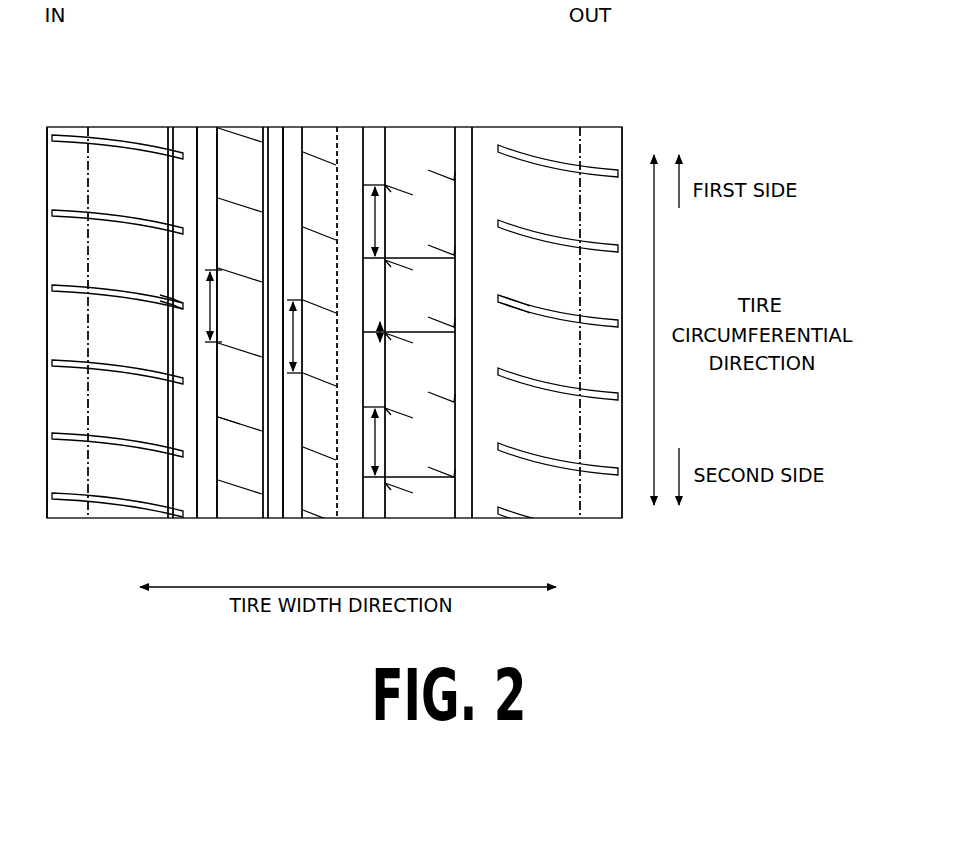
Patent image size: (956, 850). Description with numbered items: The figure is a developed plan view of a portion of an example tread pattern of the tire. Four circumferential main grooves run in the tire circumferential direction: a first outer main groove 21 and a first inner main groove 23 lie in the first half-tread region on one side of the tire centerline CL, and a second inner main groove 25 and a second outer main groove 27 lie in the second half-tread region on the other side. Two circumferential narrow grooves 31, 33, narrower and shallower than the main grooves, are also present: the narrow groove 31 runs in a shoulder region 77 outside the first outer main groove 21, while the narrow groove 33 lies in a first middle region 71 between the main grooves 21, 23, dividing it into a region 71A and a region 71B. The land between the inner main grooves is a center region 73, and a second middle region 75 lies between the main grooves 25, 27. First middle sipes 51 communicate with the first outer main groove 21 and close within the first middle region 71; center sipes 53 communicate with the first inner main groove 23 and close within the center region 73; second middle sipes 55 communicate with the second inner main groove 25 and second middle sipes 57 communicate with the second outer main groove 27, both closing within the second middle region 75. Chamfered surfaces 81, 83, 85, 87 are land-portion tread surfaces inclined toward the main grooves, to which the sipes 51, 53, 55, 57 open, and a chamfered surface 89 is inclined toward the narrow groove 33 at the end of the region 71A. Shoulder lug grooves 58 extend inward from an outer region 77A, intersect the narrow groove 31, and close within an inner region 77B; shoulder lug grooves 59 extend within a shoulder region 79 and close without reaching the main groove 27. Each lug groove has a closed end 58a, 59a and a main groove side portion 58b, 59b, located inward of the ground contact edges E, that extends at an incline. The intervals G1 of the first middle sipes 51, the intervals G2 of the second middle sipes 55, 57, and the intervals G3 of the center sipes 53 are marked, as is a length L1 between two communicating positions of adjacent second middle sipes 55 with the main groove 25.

The first outer main groove 21 is at (203, 348).
The first inner main groove 23 is at (294, 348).
The second inner main groove 25 is at (372, 348).
The second outer main groove 27 is at (461, 348).
The narrow groove 31 is at (164, 348).
The narrow groove 33 is at (259, 348).
The first middle sipe 51 is at (240, 311).
The center sipe 53 is at (319, 337).
The second middle sipe 55 is at (399, 339).
The second middle sipe 57 is at (441, 286).
The shoulder lug groove 58 is at (117, 326).
The closed end 58a is at (156, 262).
The main groove side portion 58b is at (154, 324).
The shoulder lug groove 59 is at (558, 342).
The closed end 59a is at (508, 275).
The main groove side portion 59b is at (523, 330).
The first middle region 71 is at (260, 278).
The region 71A is at (240, 299).
The region 71B is at (282, 299).
The center region 73 is at (336, 299).
The second middle region 75 is at (420, 299).
The shoulder region 77 is at (126, 278).
The outer region 77A is at (107, 299).
The inner region 77B is at (182, 299).
The shoulder region 79 is at (547, 299).
The first middle chamfered surface 81 is at (232, 446).
The center chamfered surface 83 is at (319, 476).
The second middle chamfered surface 85 is at (408, 358).
The second middle chamfered surface 87 is at (439, 448).
The chamfered surface 89 is at (240, 405).
The interval of first middle sipes G1 is at (228, 290).
The interval of second middle sipes G2 is at (395, 284).
The interval of center sipes G3 is at (310, 315).
The length L1 is at (409, 442).
The ground contact edge E is at (334, 309).
The tire centerline CL is at (337, 309).